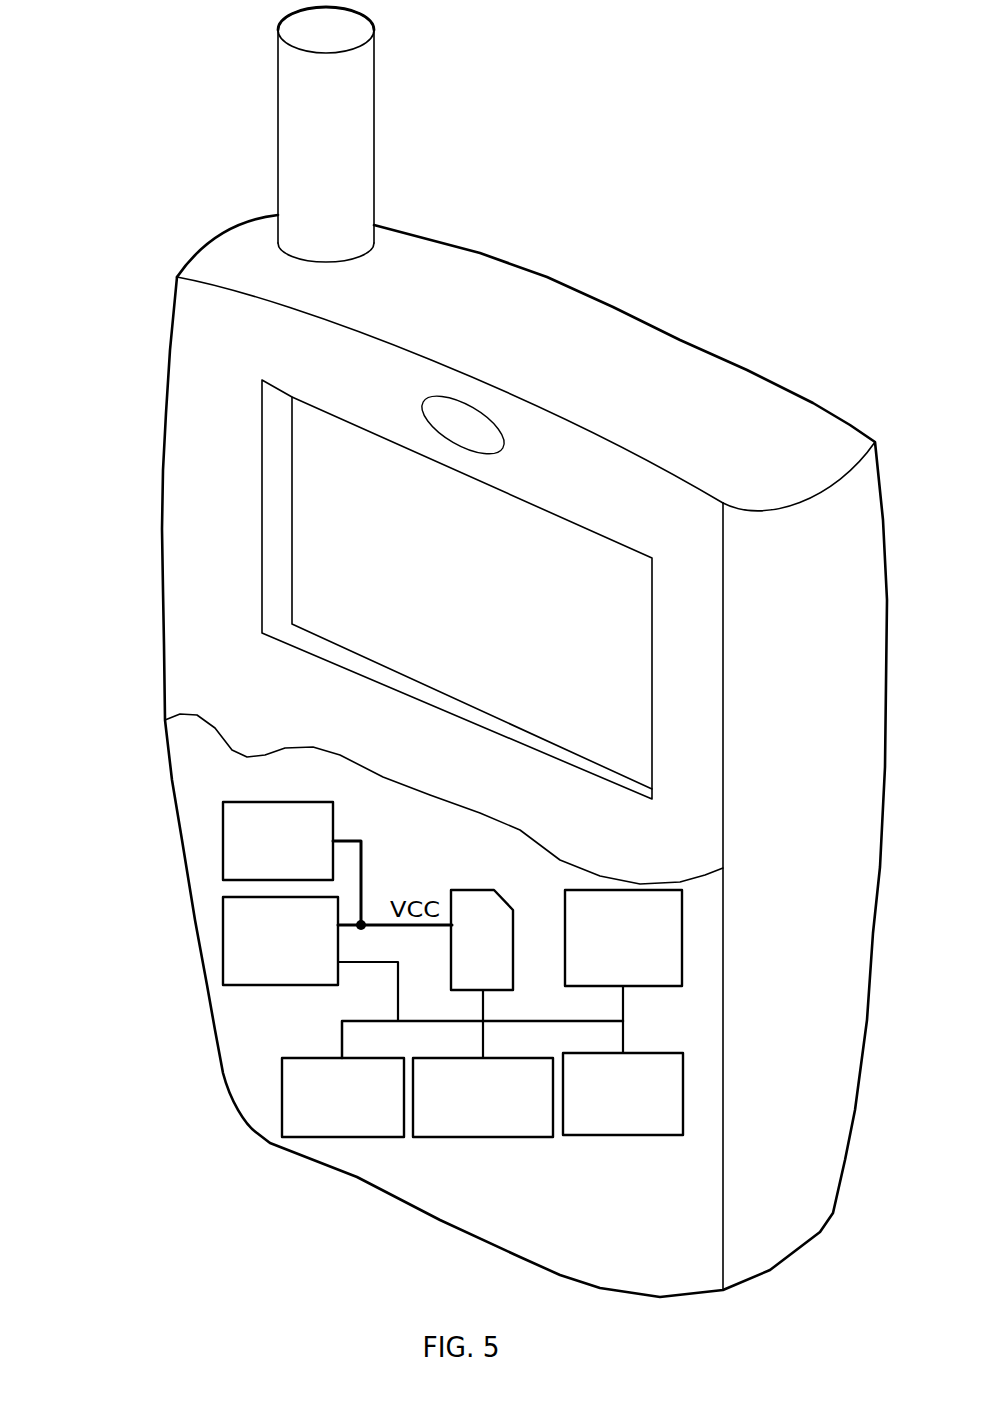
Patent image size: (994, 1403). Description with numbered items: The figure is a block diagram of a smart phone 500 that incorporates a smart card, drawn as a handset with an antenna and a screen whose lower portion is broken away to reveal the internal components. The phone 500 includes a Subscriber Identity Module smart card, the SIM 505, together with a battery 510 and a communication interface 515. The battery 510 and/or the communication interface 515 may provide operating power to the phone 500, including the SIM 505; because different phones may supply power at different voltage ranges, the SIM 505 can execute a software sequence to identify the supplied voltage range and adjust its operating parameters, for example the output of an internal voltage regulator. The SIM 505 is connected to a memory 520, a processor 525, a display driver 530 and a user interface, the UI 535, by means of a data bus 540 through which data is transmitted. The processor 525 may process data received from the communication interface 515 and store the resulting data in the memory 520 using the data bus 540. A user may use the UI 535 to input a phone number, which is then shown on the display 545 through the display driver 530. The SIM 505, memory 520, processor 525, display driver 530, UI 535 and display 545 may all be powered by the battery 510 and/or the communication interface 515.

The smart phone 500 is at (104, 251).
The SIM smart card 505 is at (467, 986).
The battery 510 is at (284, 832).
The communication interface 515 is at (289, 981).
The memory 520 is at (356, 1132).
The processor 525 is at (503, 1132).
The display driver 530 is at (632, 981).
The user interface 535 is at (632, 1127).
The data bus 540 is at (342, 1033).
The display 545 is at (431, 587).